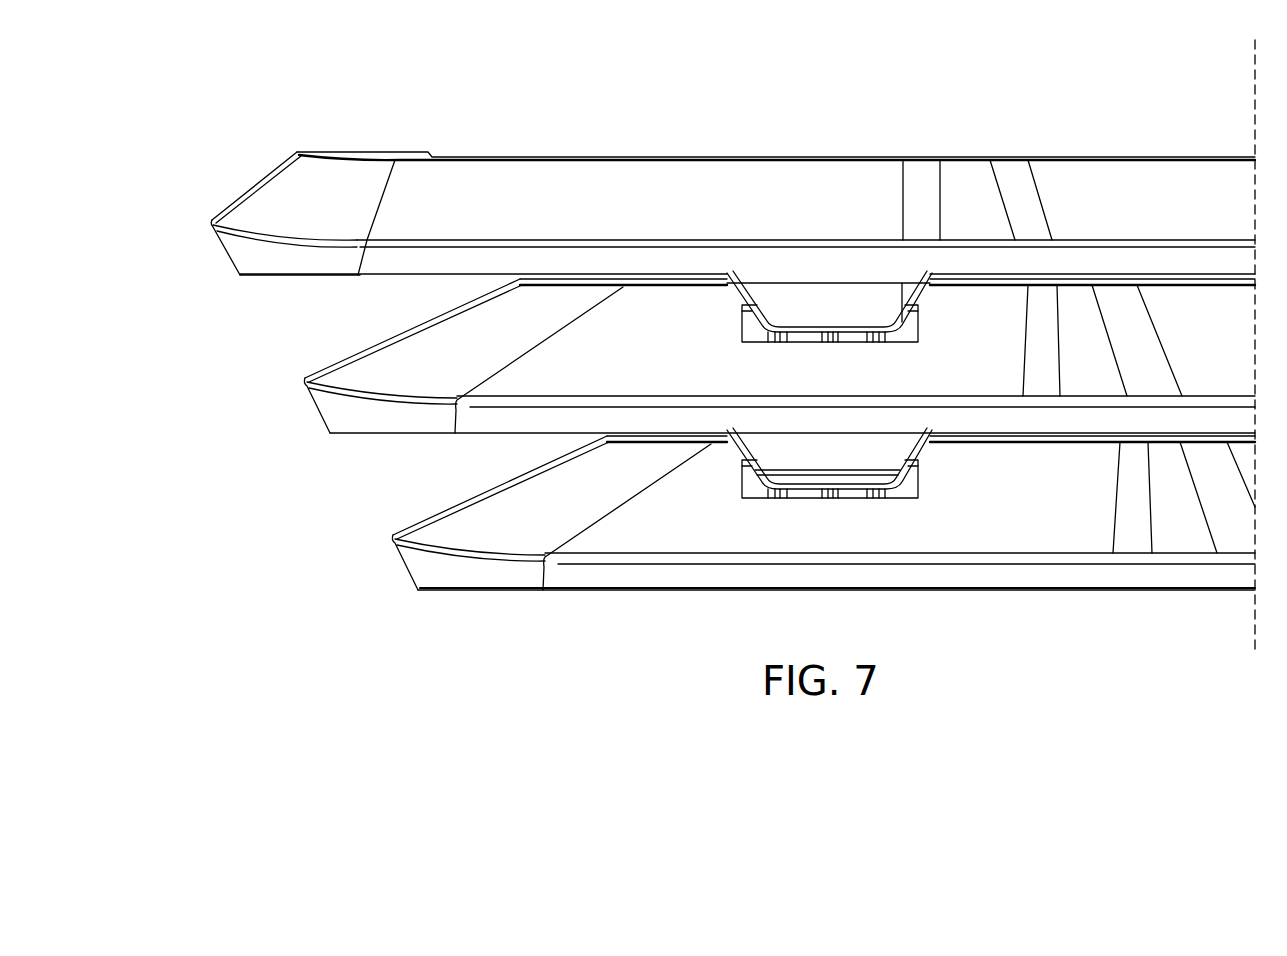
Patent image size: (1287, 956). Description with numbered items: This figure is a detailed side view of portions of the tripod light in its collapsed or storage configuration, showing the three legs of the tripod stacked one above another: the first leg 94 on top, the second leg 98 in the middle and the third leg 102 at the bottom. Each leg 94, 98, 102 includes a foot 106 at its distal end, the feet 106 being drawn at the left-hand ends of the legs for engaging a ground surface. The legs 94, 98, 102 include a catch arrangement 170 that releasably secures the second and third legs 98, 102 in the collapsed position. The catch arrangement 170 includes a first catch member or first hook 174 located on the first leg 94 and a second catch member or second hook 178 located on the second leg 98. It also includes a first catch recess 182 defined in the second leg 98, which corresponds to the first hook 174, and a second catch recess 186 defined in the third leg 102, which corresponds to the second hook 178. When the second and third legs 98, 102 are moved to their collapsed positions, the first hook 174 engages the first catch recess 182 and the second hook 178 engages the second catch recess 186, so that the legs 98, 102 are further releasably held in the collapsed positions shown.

The catch arrangement 170 is at (739, 104).
The first leg 94 is at (1153, 171).
The second leg 98 is at (1228, 421).
The third leg 102 is at (1205, 575).
The foot 106 is at (252, 260).
The first hook 174 is at (825, 303).
The second hook 178 is at (827, 470).
The first catch recess 182 is at (886, 348).
The second catch recess 186 is at (886, 503).